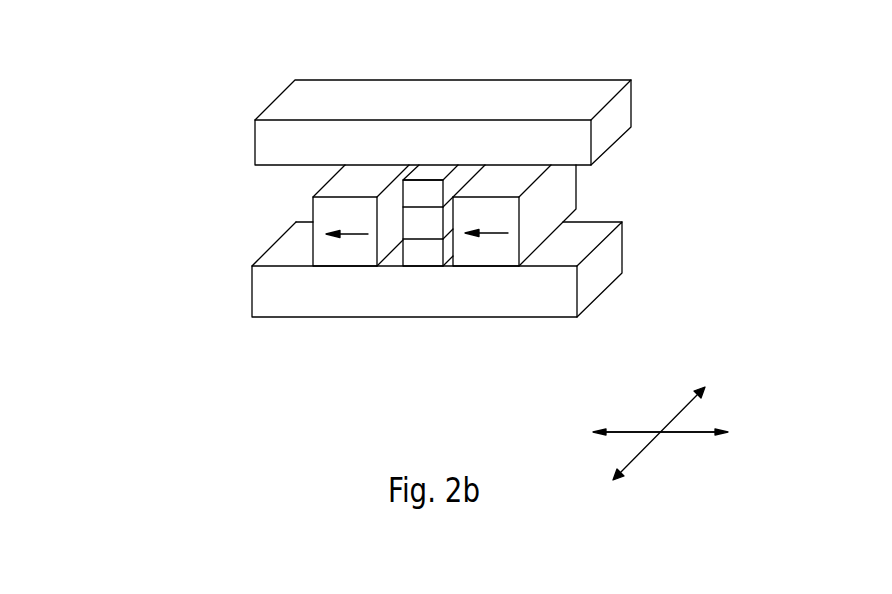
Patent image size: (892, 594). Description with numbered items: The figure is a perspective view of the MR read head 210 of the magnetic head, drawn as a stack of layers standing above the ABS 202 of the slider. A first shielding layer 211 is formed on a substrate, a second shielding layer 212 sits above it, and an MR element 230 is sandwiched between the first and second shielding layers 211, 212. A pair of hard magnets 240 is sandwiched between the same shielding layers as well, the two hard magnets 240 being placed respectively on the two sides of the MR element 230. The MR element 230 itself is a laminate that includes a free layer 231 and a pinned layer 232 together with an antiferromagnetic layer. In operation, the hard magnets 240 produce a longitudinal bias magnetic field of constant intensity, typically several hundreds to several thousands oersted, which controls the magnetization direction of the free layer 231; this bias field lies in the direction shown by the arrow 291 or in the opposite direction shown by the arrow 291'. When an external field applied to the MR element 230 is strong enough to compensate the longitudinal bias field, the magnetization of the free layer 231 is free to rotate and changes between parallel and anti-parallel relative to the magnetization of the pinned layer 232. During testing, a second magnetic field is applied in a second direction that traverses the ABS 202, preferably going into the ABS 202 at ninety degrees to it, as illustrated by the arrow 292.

The MR read head 210 is at (245, 58).
The second shielding layer 212 is at (587, 98).
The first shielding layer 211 is at (587, 237).
The ABS 202 is at (537, 297).
The hard magnet 240 is at (328, 248).
The MR element 230 is at (360, 290).
The free layer 231 is at (413, 193).
The pinned layer 232 is at (422, 225).
The direction of longitudinal bias field 291 is at (637, 433).
The opposite direction of longitudinal bias field 291' is at (693, 433).
The second direction 292 is at (685, 424).